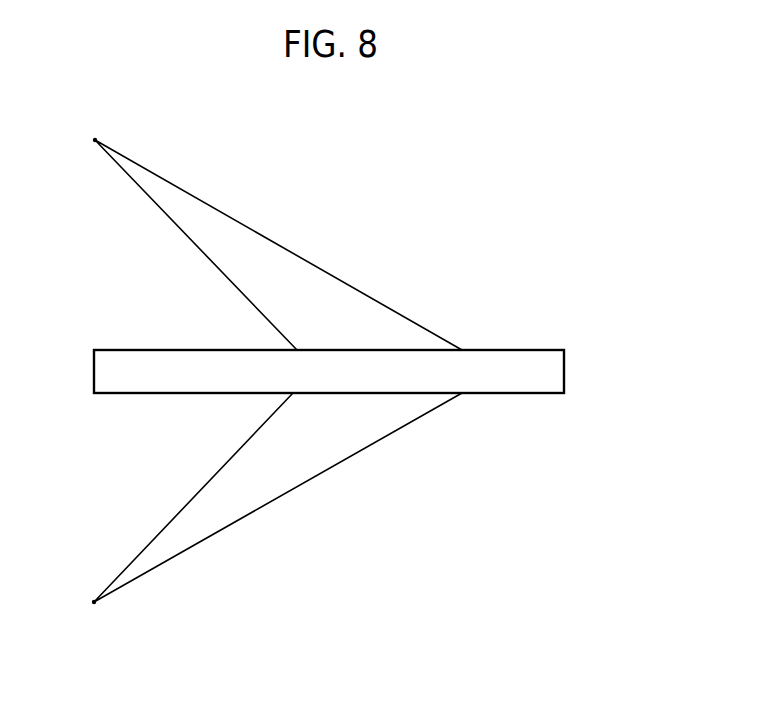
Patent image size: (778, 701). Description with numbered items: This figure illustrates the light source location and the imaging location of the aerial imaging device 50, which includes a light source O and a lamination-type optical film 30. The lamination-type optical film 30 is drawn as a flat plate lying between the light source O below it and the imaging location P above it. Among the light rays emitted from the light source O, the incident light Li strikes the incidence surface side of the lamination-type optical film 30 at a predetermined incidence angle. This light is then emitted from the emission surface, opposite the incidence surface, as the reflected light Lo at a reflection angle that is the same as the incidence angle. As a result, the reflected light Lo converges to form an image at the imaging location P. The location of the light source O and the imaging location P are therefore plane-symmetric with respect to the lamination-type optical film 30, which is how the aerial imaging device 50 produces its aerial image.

The lamination-type optical film 30 is at (566, 381).
The aerial imaging device 50 is at (555, 188).
The imaging location P is at (82, 139).
The light source O is at (81, 603).
The reflected light Lo is at (278, 245).
The incident light Li is at (278, 497).